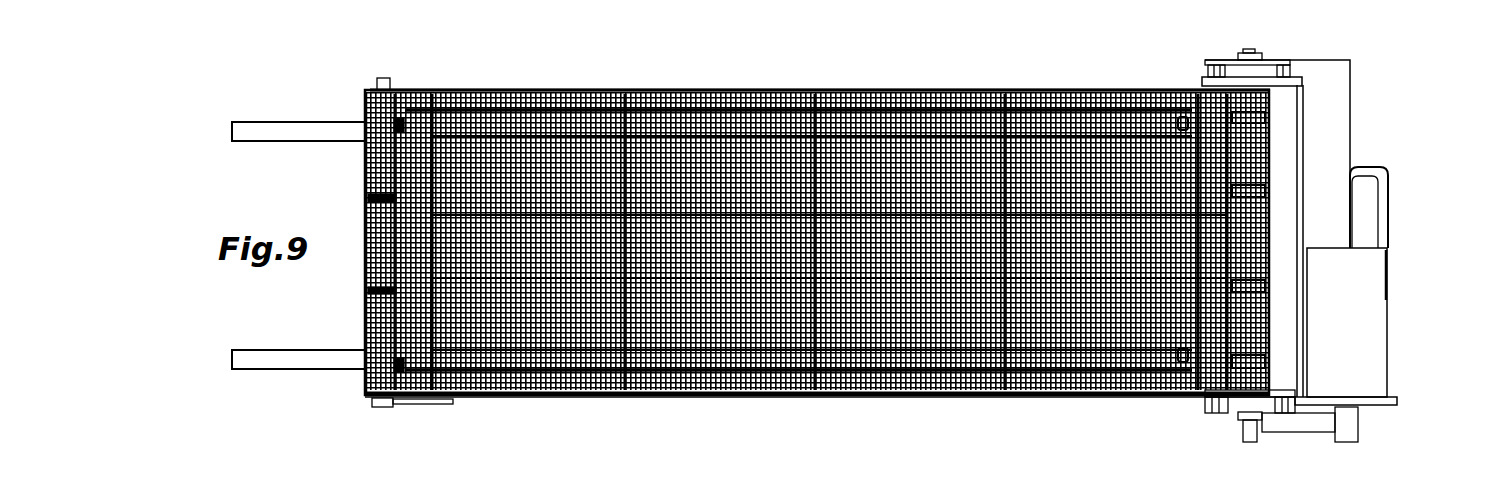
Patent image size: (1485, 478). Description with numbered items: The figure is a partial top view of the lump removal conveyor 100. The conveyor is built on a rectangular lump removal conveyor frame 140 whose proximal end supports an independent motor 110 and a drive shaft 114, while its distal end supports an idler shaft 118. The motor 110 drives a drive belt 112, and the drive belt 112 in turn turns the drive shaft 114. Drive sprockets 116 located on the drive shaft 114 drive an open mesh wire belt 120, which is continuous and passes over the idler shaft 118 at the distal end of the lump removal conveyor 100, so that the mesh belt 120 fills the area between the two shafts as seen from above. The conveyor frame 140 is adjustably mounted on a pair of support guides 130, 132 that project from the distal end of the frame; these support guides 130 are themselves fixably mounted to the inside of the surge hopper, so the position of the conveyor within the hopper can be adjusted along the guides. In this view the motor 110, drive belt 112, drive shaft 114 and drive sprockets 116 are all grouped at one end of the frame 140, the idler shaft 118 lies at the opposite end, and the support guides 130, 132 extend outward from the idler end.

The lump removal conveyor 100 is at (746, 86).
The independent motor 110 is at (1362, 345).
The drive belt 112 is at (1302, 428).
The drive shaft 114 is at (1268, 137).
The drive sprockets 116 is at (1268, 191).
The idler shaft 118 is at (368, 158).
The open mesh wire belt 120 is at (868, 142).
The support guides 130 is at (275, 127).
The lower fork 132 is at (287, 365).
The lump removal conveyor frame 140 is at (717, 397).